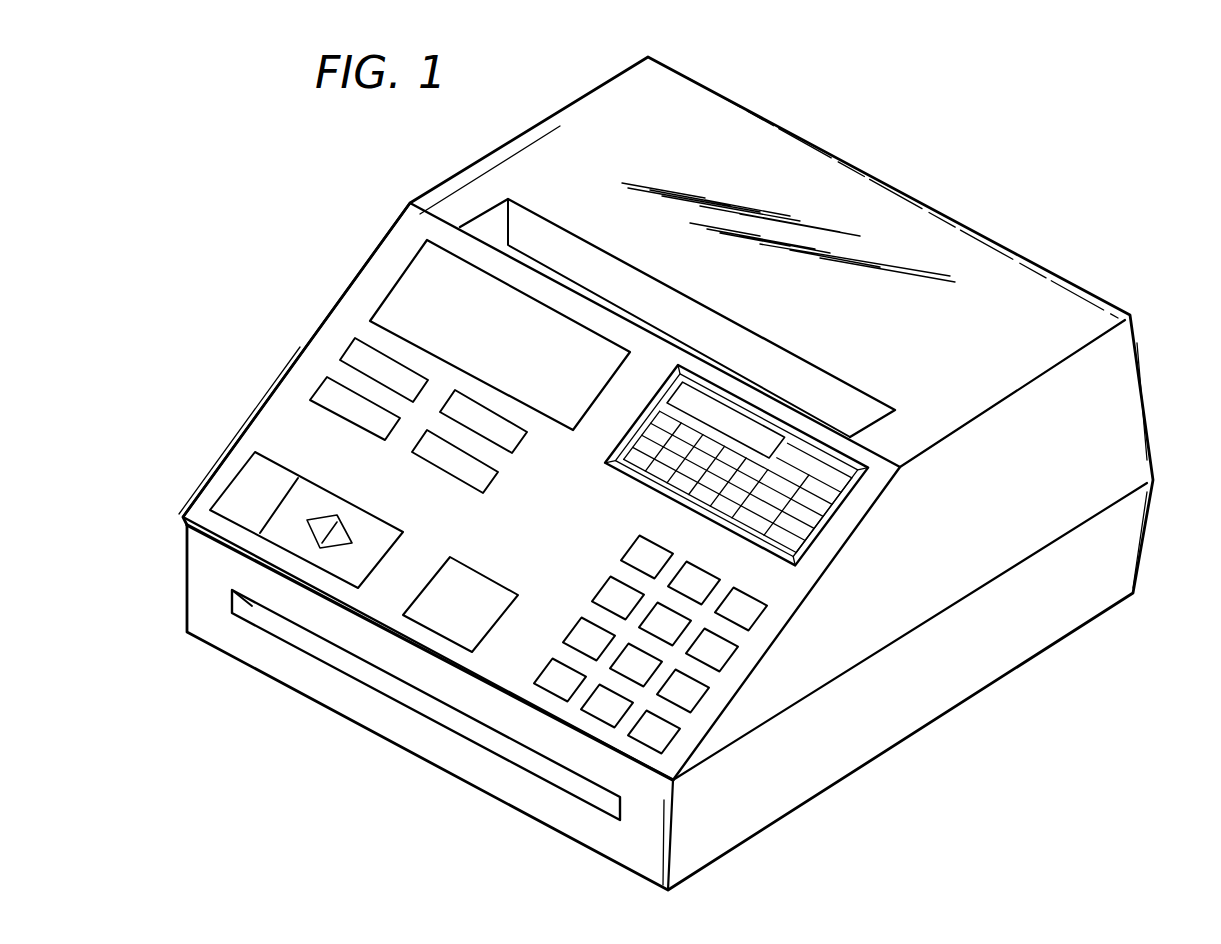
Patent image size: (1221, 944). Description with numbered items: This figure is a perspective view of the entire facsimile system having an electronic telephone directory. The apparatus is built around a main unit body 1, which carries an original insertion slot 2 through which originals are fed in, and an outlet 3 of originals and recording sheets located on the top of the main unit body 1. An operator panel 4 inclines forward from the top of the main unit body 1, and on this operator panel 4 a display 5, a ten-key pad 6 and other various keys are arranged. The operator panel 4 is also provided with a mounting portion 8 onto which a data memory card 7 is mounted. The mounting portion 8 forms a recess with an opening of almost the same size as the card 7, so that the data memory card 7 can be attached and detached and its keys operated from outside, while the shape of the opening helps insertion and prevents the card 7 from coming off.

The main unit body 1 is at (1140, 412).
The original insertion slot 2 is at (553, 772).
The outlet of originals and recording sheets 3 is at (807, 372).
The operator panel 4 is at (286, 438).
The display 5 is at (392, 300).
The ten-key pad 6 is at (740, 660).
The data memory card 7 is at (878, 498).
The mounting portion 8 is at (810, 553).